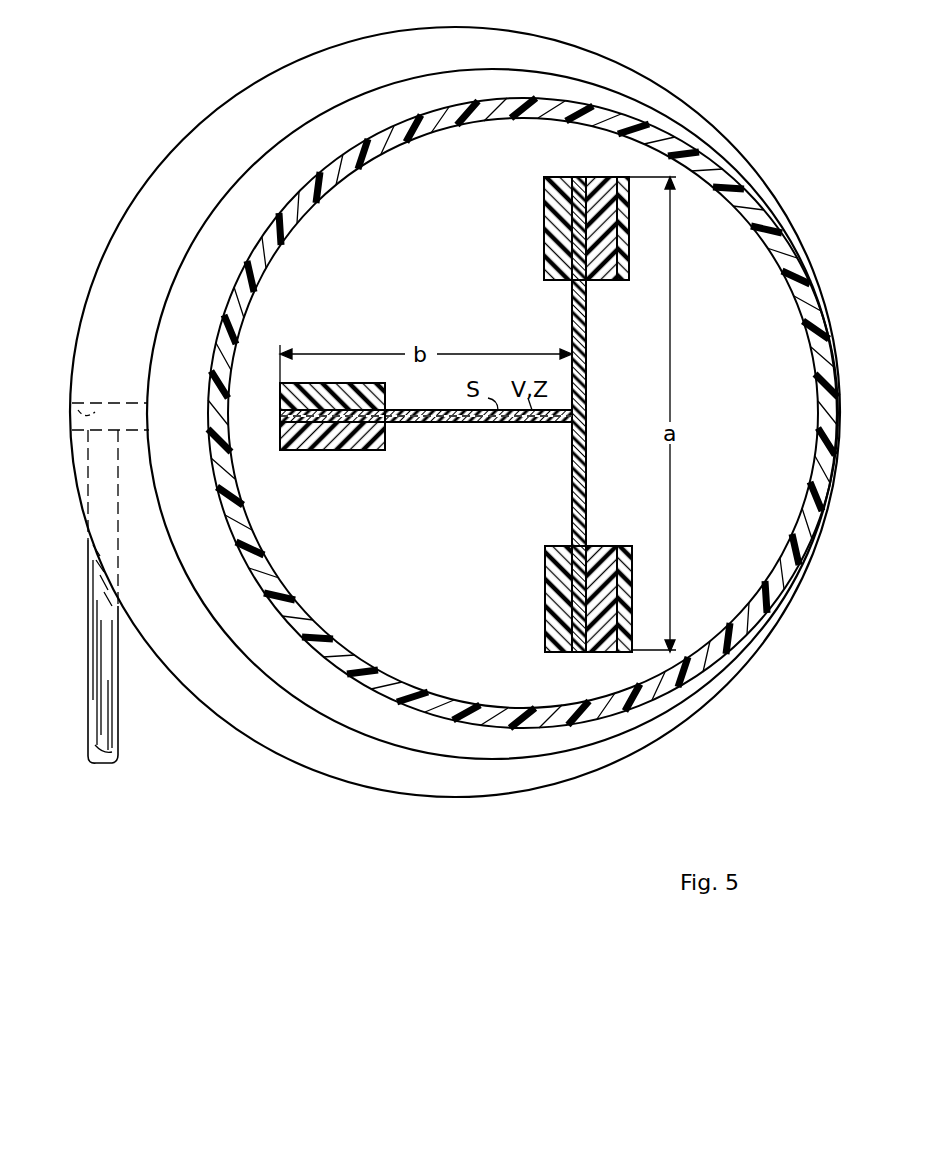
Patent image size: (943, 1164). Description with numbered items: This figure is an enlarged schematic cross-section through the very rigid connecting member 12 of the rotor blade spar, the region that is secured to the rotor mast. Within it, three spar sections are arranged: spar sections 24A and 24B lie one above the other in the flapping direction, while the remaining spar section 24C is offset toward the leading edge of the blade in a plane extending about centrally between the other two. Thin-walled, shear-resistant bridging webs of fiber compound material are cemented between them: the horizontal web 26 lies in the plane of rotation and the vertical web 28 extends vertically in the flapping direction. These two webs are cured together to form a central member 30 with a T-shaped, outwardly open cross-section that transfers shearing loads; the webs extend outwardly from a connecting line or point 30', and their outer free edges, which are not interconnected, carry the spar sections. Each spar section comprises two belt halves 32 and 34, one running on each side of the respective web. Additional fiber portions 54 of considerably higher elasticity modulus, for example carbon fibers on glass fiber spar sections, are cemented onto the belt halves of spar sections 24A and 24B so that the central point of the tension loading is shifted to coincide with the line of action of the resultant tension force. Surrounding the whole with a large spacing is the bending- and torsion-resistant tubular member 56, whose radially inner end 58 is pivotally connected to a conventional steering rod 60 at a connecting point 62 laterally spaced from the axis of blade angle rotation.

The connecting member 12 is at (436, 298).
The spar section 24A is at (572, 177).
The spar section 24B is at (576, 655).
The spar section 24C is at (302, 450).
The horizontal web 26 is at (430, 410).
The vertical web 28 is at (584, 366).
The central member 30 is at (426, 455).
The connecting line or point 30' is at (613, 406).
The belt half 32 is at (548, 220).
The belt half 34 is at (596, 184).
The additional fiber portion 54 is at (630, 258).
The tubular member 56 is at (822, 372).
The radially inner end 58 is at (134, 244).
The steering rod 60 is at (100, 684).
The connecting point 62 is at (74, 414).